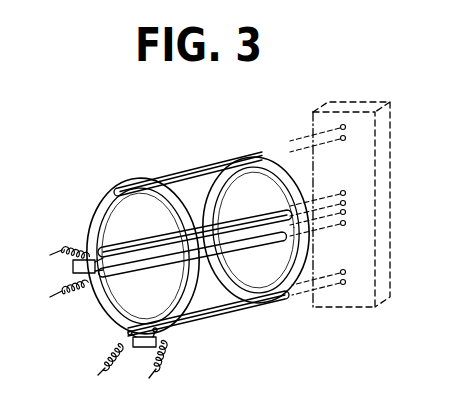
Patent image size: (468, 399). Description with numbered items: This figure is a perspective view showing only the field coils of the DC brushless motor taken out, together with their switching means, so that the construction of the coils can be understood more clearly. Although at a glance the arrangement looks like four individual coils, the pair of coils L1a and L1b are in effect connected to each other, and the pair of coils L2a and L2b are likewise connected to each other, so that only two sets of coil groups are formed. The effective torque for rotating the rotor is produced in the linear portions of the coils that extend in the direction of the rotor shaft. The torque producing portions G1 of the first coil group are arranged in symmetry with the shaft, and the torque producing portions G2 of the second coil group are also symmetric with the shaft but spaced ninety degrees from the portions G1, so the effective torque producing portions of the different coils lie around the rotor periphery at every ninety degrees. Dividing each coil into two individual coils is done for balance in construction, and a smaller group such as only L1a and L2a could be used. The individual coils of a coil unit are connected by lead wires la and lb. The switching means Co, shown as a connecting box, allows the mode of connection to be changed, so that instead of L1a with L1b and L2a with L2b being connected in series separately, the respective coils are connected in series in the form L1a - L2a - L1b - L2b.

The coil L1a is at (110, 224).
The coil L1b is at (104, 297).
The coil L2a is at (112, 195).
The coil L2b is at (193, 322).
The torque producing portion G1 is at (143, 243).
The torque producing portion G2 is at (185, 171).
The lead wire la is at (73, 271).
The lead wire lb is at (141, 348).
The switching means Co is at (380, 140).